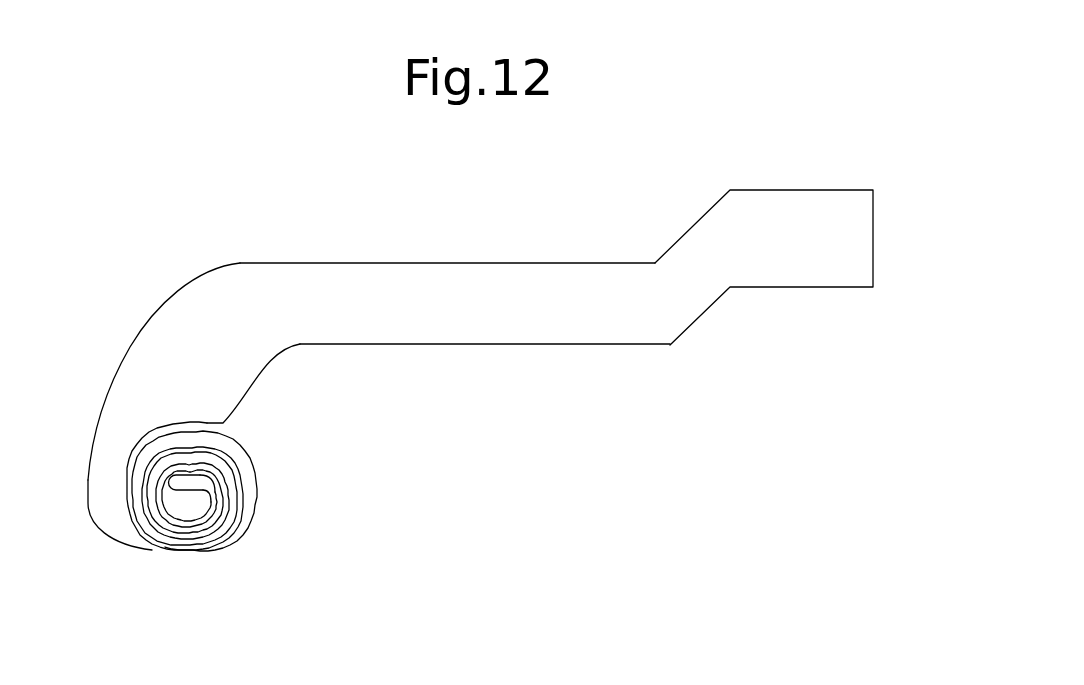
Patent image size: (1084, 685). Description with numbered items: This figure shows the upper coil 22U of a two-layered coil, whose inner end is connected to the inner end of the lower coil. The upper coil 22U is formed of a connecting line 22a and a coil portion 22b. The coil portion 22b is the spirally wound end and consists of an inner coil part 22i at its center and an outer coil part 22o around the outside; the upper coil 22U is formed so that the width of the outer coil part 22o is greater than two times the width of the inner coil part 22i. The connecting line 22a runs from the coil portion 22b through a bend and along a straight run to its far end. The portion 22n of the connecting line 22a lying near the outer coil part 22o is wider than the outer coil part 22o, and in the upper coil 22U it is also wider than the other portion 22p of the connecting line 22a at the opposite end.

The upper coil 22U is at (268, 240).
The connecting line 22a is at (458, 278).
The other portion of the connecting line 22p is at (762, 208).
The portion of the connecting line 22n is at (165, 335).
The outer coil part 22o is at (113, 508).
The inner coil part 22i is at (198, 480).
The coil portion 22b is at (182, 540).